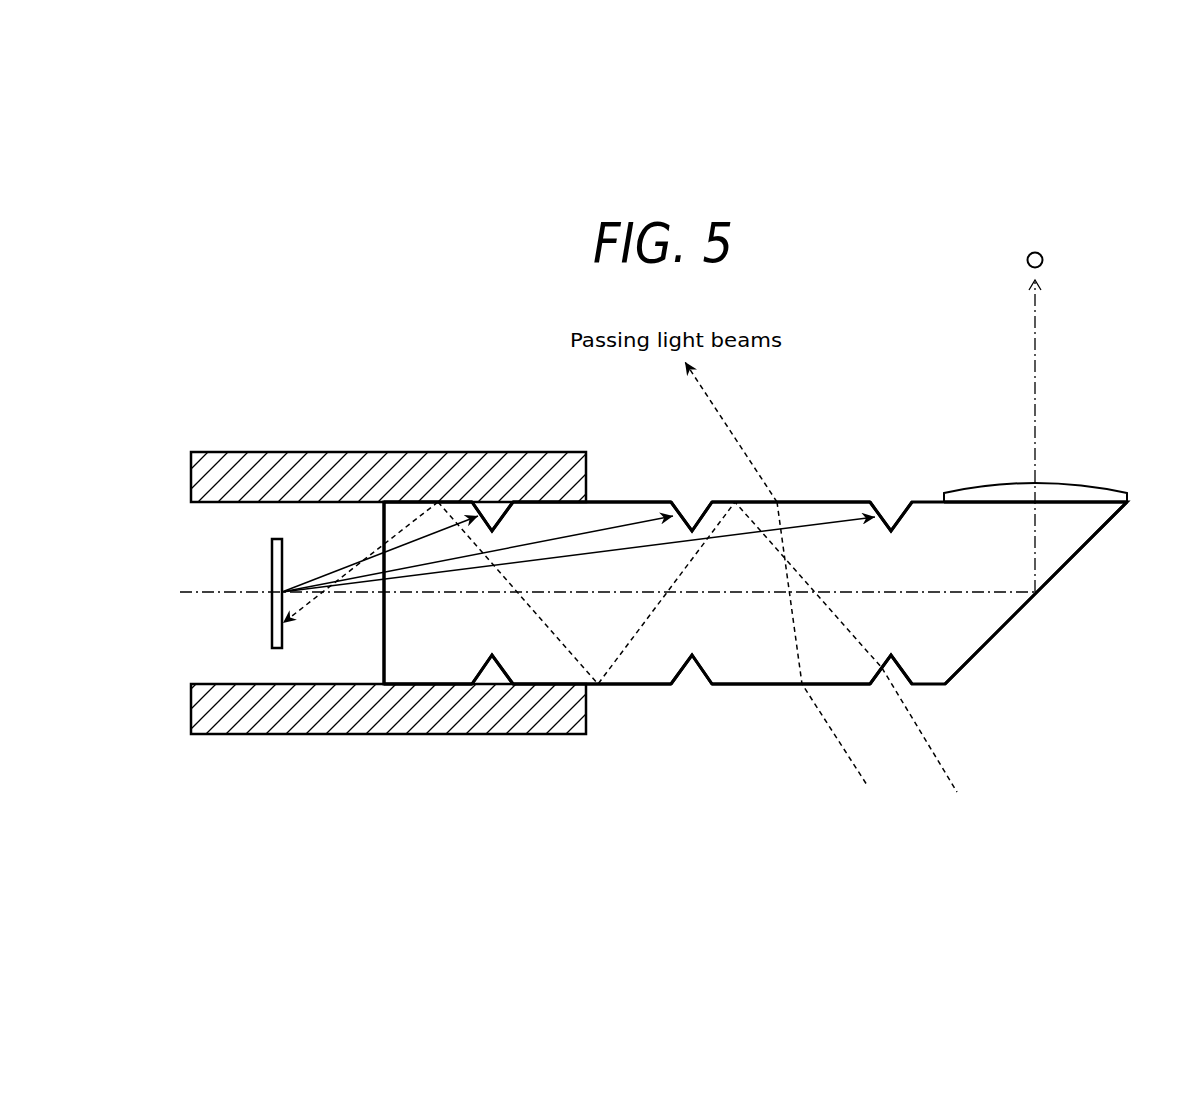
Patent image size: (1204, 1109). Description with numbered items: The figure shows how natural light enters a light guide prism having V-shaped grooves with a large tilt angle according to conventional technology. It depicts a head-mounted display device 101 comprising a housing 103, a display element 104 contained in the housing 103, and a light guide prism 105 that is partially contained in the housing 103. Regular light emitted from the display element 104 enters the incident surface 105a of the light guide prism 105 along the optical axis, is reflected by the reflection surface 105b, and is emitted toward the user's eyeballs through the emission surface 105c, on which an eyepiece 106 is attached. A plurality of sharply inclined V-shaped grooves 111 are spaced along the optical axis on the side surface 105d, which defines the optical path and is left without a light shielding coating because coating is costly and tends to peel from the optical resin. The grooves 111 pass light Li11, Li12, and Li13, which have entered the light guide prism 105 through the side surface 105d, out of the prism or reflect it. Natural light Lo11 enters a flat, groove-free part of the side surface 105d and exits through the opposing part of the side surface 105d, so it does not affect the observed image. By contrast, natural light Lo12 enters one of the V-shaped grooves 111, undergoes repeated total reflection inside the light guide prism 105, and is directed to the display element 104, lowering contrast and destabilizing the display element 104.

The head-mounted display device 101 is at (527, 378).
The housing 103 is at (317, 467).
The display element 104 is at (270, 560).
The light guide prism 105 is at (738, 645).
The incident surface 105a is at (383, 623).
The reflection surface 105b is at (1070, 562).
The emission surface 105c is at (1097, 502).
The side surface 105d is at (611, 500).
The eyepiece 106 is at (1062, 490).
The V-shaped grooves 111 is at (893, 510).
The light Li11 is at (338, 570).
The light Li12 is at (640, 522).
The light Li13 is at (817, 520).
The natural light Lo11 is at (848, 758).
The natural light Lo12 is at (937, 760).